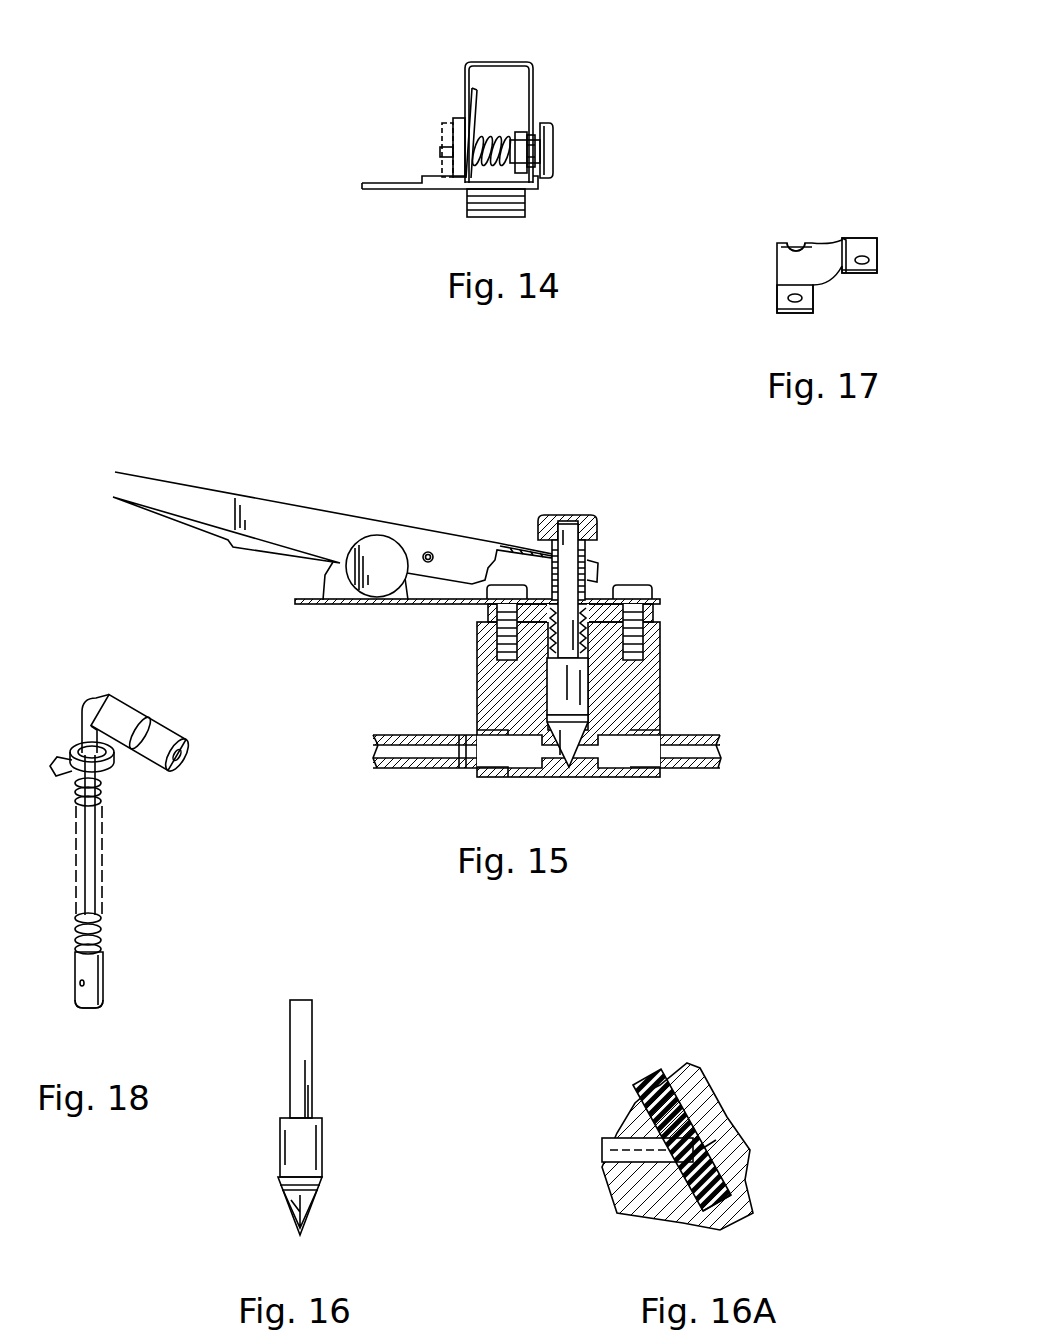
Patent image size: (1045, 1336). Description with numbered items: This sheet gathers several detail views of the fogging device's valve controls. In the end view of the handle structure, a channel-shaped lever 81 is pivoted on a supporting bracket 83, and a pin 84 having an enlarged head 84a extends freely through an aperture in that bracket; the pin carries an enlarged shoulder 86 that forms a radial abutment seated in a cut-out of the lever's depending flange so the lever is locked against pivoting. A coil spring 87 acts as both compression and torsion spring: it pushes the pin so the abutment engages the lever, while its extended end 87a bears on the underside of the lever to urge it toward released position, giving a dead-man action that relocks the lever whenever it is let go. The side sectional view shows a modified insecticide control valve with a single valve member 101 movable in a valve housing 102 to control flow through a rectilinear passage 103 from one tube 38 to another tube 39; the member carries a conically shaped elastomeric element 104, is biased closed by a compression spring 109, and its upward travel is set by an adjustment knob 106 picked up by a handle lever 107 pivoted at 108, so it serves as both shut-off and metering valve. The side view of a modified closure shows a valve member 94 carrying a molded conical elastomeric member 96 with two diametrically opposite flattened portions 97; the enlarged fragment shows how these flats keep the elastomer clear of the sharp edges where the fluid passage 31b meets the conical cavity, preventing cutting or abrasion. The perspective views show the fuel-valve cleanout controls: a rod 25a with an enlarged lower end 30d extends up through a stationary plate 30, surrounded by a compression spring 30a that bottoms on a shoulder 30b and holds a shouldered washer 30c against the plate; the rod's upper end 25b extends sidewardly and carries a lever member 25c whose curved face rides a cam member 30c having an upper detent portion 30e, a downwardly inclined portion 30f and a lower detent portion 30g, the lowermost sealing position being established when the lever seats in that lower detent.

In FIG. 14, the lever 81 is at (512, 62).
In FIG. 14, the supporting bracket 83 is at (531, 152).
In FIG. 14, the pin 84 is at (525, 133).
In FIG. 14, the enlarged head 84a is at (548, 149).
In FIG. 14, the enlarged shoulder 86 is at (458, 123).
In FIG. 14, the coil spring 87 is at (496, 143).
In FIG. 14, the spring end 87a is at (473, 95).
In FIG. 18, the stationary plate 30 is at (62, 760).
In FIG. 18, the compression spring 30a is at (103, 922).
In FIG. 18, the shoulder 30b is at (103, 960).
In FIG. 17, the cam member 30c is at (825, 270).
In FIG. 18, the cam member 30c is at (110, 767).
In FIG. 18, the enlarged lower end 30d is at (105, 992).
In FIG. 17, the detent portion 30e is at (846, 258).
In FIG. 17, the downwardly inclined portion 30f is at (810, 250).
In FIG. 17, the lower detent portion 30g is at (847, 240).
In FIG. 18, the rod 25a is at (95, 832).
In FIG. 18, the upper end 25b is at (181, 757).
In FIG. 18, the lever member 25c is at (176, 738).
In FIG. 15, the valve member 101 is at (547, 658).
In FIG. 15, the valve housing 102 is at (652, 672).
In FIG. 15, the rectilinear passage 103 is at (550, 752).
In FIG. 15, the conically shaped elastomeric element 104 is at (575, 730).
In FIG. 15, the adjustment knob 106 is at (597, 523).
In FIG. 15, the handle lever 107 is at (332, 525).
In FIG. 15, the pivot 108 is at (430, 550).
In FIG. 15, the compression spring 109 is at (587, 620).
In FIG. 15, the tube 38 is at (420, 770).
In FIG. 15, the tube 39 is at (688, 770).
In FIG. 16, the valve member 94 is at (303, 1072).
In FIG. 16, the elastomeric member 96 is at (306, 1178).
In FIG. 16A, the elastomeric member 96 is at (653, 1097).
In FIG. 16, the flattened portions 97 is at (292, 1215).
In FIG. 16A, the flattened portions 97 is at (687, 1145).
In FIG. 16A, the fluid passage 31b is at (620, 1148).